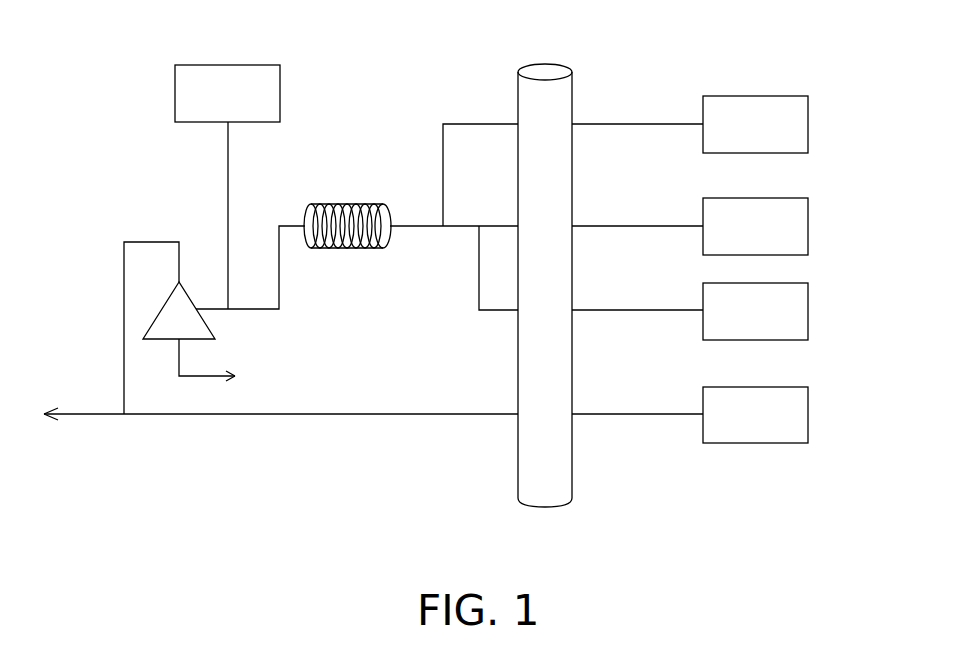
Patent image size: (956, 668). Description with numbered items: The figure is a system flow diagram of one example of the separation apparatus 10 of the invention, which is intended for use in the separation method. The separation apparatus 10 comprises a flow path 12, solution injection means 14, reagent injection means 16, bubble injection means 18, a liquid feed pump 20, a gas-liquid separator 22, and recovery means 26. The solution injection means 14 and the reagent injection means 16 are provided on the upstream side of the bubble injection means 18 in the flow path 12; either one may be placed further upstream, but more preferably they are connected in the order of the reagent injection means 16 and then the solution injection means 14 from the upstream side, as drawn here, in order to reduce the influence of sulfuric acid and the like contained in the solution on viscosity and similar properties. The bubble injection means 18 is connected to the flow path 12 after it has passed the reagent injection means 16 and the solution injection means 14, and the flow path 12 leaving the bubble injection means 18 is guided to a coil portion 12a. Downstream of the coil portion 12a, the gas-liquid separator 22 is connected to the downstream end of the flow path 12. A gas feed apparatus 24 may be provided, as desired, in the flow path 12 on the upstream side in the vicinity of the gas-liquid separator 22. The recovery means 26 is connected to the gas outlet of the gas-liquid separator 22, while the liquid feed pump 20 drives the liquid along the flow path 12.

The separation apparatus 10 is at (126, 50).
The flow path 12 is at (418, 226).
The coil portion 12a is at (350, 205).
The solution injection means 14 is at (793, 311).
The reagent injection means 16 is at (793, 226).
The bubble injection means 18 is at (793, 122).
The liquid feed pump 20 is at (555, 96).
The gas-liquid separator 22 is at (197, 323).
The gas feed apparatus 24 is at (243, 70).
The recovery means 26 is at (793, 415).